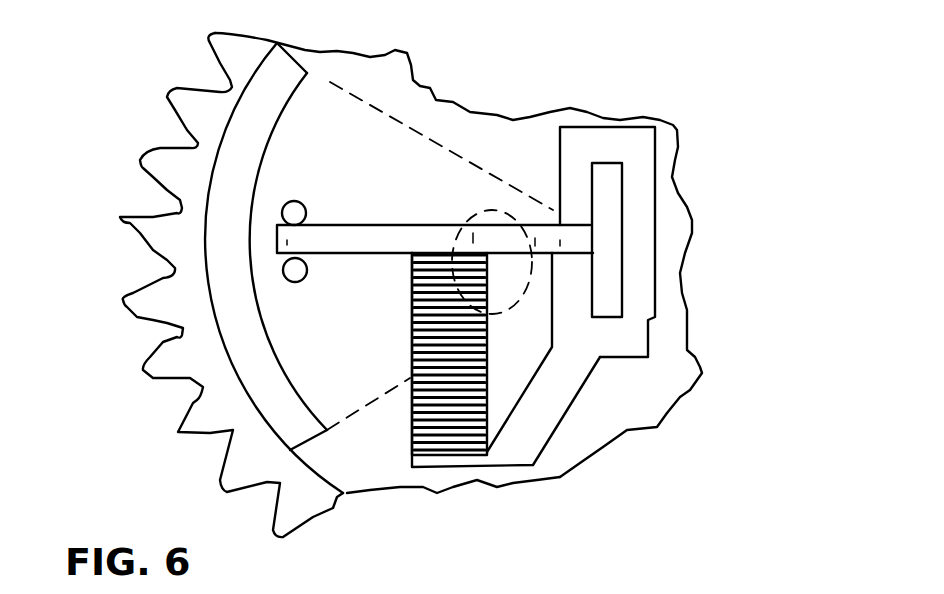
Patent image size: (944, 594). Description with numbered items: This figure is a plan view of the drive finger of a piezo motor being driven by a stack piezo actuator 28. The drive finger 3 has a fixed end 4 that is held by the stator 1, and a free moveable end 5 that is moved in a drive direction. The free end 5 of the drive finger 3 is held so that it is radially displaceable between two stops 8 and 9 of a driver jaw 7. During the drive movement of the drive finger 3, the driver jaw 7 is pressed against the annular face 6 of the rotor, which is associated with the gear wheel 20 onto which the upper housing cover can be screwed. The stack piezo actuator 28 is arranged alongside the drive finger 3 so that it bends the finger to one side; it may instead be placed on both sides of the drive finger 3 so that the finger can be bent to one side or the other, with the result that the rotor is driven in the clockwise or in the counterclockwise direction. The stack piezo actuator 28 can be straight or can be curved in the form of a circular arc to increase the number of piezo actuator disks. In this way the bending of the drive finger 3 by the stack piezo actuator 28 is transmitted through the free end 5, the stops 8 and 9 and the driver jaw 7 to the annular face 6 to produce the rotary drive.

The stator 1 is at (585, 343).
The drive finger 3 is at (384, 243).
The fixed end 4 is at (605, 205).
The free moveable end 5 is at (285, 243).
The annular face 6 is at (343, 493).
The driver jaw 7 is at (240, 323).
The stop 8 is at (283, 213).
The stop 9 is at (283, 270).
The gear wheel 20 is at (190, 410).
The stack piezo actuator 28 is at (410, 318).